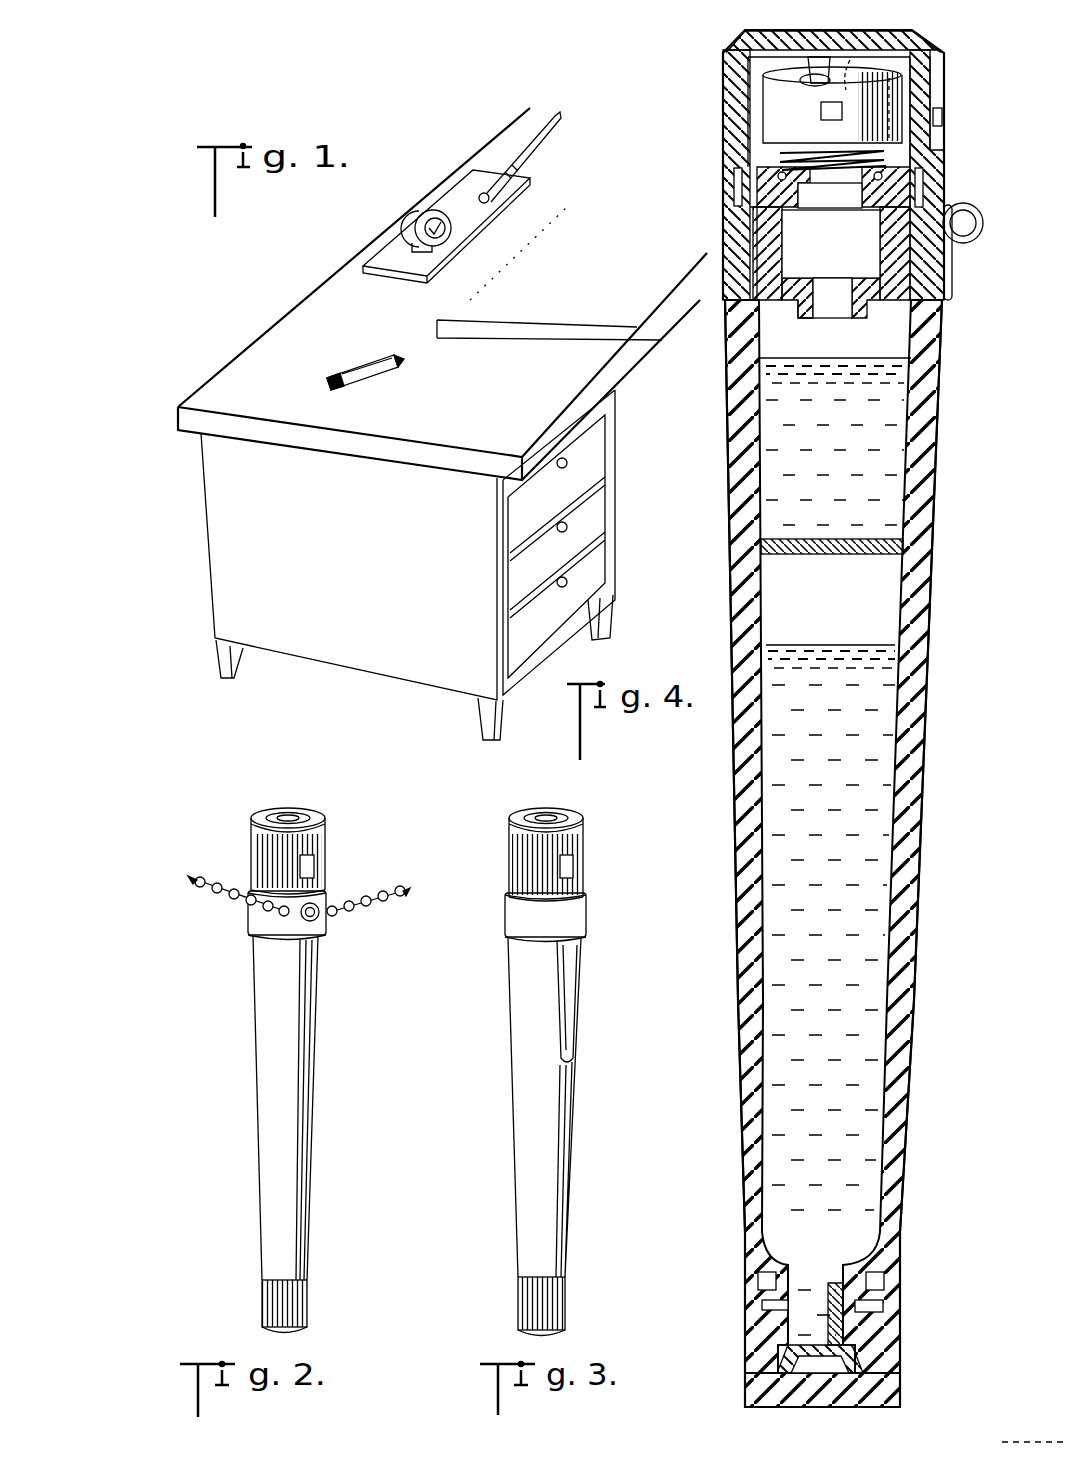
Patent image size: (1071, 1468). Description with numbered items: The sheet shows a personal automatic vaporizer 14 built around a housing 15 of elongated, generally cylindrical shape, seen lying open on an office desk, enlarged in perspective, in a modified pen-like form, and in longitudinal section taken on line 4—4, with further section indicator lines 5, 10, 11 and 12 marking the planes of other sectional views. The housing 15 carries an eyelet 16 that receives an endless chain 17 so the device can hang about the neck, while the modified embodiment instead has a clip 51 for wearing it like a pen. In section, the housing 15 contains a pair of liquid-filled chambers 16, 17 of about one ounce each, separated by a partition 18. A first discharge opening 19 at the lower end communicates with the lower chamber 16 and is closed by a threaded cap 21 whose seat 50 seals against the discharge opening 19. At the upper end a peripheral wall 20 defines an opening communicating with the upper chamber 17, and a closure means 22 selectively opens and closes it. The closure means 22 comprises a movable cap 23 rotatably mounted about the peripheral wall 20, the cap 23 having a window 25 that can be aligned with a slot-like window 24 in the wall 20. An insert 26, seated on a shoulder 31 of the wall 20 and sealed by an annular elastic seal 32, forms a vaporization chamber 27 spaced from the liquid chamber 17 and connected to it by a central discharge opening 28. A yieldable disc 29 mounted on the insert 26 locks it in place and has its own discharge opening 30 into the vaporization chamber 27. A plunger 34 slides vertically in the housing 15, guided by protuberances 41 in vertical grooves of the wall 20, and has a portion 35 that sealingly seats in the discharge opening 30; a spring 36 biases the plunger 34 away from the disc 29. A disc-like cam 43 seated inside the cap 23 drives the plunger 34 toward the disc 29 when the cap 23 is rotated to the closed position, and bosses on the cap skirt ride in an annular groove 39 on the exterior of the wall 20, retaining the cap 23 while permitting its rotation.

In FIG. 2, the line 4— 4 is at (283, 800).
In FIG. 4, the section line 5- 5 is at (836, 27).
In FIG. 4, the section line 10- 10 is at (698, 56).
In FIG. 4, the section line 11- 11 is at (689, 190).
In FIG. 4, the section line 12- 12 is at (678, 153).
In FIG. 1, the personal automatic vaporizer 14 is at (367, 357).
In FIG. 2, the personal automatic vaporizer 14 is at (240, 1040).
In FIG. 4, the personal automatic vaporizer 14 is at (710, 612).
In FIG. 2, the housing 15 is at (302, 1003).
In FIG. 4, the housing 15 is at (927, 617).
In FIG. 2, the eyelet; lower chamber 16 is at (320, 921).
In FIG. 4, the eyelet; lower chamber 16 is at (875, 790).
In FIG. 2, the endless chain; upper chamber 17 is at (221, 877).
In FIG. 4, the endless chain; upper chamber 17 is at (890, 467).
In FIG. 4, the partition 18 is at (836, 556).
In FIG. 4, the first discharge opening 19 is at (837, 1289).
In FIG. 4, the peripheral wall 20 is at (853, 150).
In FIG. 2, the cap 21 is at (306, 1299).
In FIG. 3, the cap 21 is at (521, 1293).
In FIG. 4, the cap 21 is at (882, 1324).
In FIG. 2, the closure means 22 is at (289, 838).
In FIG. 3, the closure means 22 is at (544, 854).
In FIG. 4, the closure means 22 is at (712, 36).
In FIG. 4, the movable cap 23 is at (912, 36).
In FIG. 4, the window 24 is at (920, 102).
In FIG. 2, the window 25 is at (317, 862).
In FIG. 3, the window 25 is at (575, 867).
In FIG. 4, the window 25 is at (943, 119).
In FIG. 4, the insert 26 is at (905, 290).
In FIG. 4, the vaporization chamber 27 is at (820, 256).
In FIG. 4, the central discharge opening 28 is at (817, 321).
In FIG. 4, the disc 29 is at (752, 210).
In FIG. 4, the discharge opening 30 is at (830, 196).
In FIG. 4, the shoulder 31 is at (776, 309).
In FIG. 4, the annular elastic seal 32 is at (752, 166).
In FIG. 4, the plunger 34 is at (889, 78).
In FIG. 4, the plunger portion 35 is at (832, 100).
In FIG. 4, the spring 36 is at (806, 155).
In FIG. 4, the annular groove 39 is at (921, 181).
In FIG. 4, the protuberances 41 is at (821, 112).
In FIG. 4, the cam 43 is at (772, 32).
In FIG. 4, the seat 50 is at (863, 1349).
In FIG. 3, the clip 51 is at (515, 924).